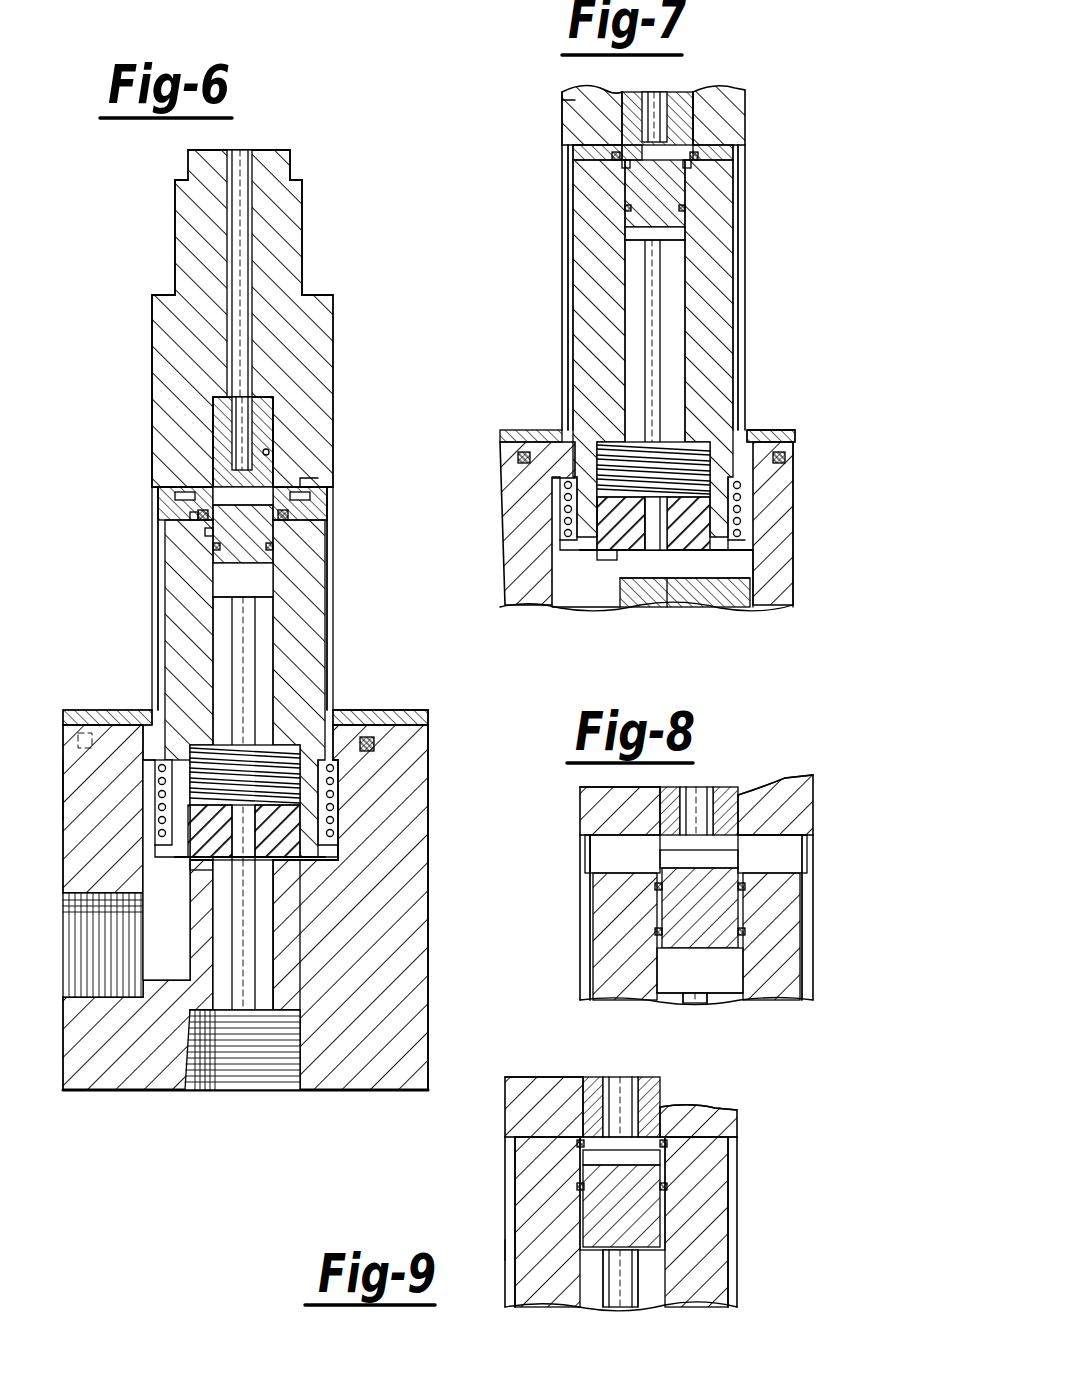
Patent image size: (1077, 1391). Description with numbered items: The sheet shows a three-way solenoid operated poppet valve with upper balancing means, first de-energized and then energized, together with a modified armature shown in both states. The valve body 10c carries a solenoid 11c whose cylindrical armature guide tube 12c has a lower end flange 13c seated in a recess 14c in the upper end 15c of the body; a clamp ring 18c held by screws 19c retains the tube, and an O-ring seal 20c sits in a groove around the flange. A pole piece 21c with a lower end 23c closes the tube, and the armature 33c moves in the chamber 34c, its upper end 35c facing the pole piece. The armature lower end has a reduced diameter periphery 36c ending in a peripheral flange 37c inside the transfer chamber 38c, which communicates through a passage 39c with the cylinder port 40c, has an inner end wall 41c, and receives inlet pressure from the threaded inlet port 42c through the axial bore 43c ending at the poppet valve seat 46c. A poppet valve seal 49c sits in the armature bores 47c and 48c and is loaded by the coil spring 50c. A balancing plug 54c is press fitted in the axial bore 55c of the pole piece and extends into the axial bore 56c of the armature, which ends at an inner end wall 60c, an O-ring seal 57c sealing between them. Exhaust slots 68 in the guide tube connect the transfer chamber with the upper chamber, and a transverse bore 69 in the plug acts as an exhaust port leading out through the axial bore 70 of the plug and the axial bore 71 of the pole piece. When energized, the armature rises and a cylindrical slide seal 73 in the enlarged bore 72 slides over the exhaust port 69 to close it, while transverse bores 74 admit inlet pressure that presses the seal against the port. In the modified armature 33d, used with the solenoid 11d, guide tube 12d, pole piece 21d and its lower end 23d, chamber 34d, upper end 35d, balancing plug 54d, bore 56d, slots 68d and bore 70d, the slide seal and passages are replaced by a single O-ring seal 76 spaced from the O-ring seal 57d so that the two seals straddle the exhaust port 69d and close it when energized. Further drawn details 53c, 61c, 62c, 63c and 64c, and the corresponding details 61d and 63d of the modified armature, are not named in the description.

In FIG. 6, the valve body 10c is at (432, 918).
In FIG. 7, the valve body 10c is at (503, 524).
In FIG. 6, the solenoid 11c is at (150, 316).
In FIG. 7, the solenoid 11c is at (560, 288).
In FIG. 8, the solenoid 11d is at (576, 910).
In FIG. 9, the solenoid 11d is at (503, 1302).
In FIG. 6, the solenoid armature guide tube 12c is at (165, 524).
In FIG. 8, the armature guide tube 12d is at (585, 878).
In FIG. 9, the armature guide tube 12d is at (508, 1250).
In FIG. 6, the lower end flange 13c is at (385, 765).
In FIG. 7, the lower end flange 13c is at (765, 472).
In FIG. 6, the recess 14c is at (100, 715).
In FIG. 7, the recess 14c is at (785, 440).
In FIG. 6, the upper end of valve body 15c is at (345, 730).
In FIG. 7, the upper end of valve body 15c is at (770, 440).
In FIG. 6, the clamp ring 18c is at (400, 715).
In FIG. 7, the clamp ring 18c is at (758, 430).
In FIG. 6, the screws 19c is at (80, 742).
In FIG. 6, the O-ring seal 20c is at (375, 748).
In FIG. 7, the O-ring seal 20c is at (780, 455).
In FIG. 6, the pole piece 21c is at (178, 235).
In FIG. 7, the pole piece 21c is at (735, 118).
In FIG. 8, the pole piece 21d is at (810, 805).
In FIG. 9, the pole piece 21d is at (505, 1105).
In FIG. 6, the lower end of pole piece 23c is at (195, 460).
In FIG. 7, the lower end of pole piece 23c is at (590, 145).
In FIG. 8, the lower end of pole piece 23d is at (805, 848).
In FIG. 9, the lower end of pole piece 23d is at (740, 1125).
In FIG. 6, the armature 33c is at (310, 640).
In FIG. 7, the armature 33c is at (580, 305).
In FIG. 8, the armature 33d is at (605, 980).
In FIG. 9, the armature 33d is at (540, 1290).
In FIG. 6, the chamber 34c is at (168, 490).
In FIG. 8, the chamber 34d is at (585, 848).
In FIG. 9, the chamber 34d is at (525, 1198).
In FIG. 6, the upper end of armature 35c is at (300, 495).
In FIG. 7, the upper end of armature 35c is at (700, 150).
In FIG. 8, the upper end of armature 35d is at (770, 855).
In FIG. 9, the upper end of armature 35d is at (710, 1140).
In FIG. 6, the reduced diameter periphery 36c is at (75, 790).
In FIG. 6, the peripheral flange 37c is at (325, 860).
In FIG. 7, the peripheral flange 37c is at (740, 550).
In FIG. 6, the transfer chamber 38c is at (335, 828).
In FIG. 7, the transfer chamber 38c is at (750, 560).
In FIG. 6, the passage 39c is at (182, 964).
In FIG. 7, the passage 39c is at (590, 600).
In FIG. 6, the cylinder port 40c is at (68, 893).
In FIG. 6, the inner end wall 41c is at (300, 870).
In FIG. 7, the inner end wall 41c is at (760, 590).
In FIG. 6, the inlet port 42c is at (195, 1060).
In FIG. 6, the axial bore 43c is at (265, 1000).
In FIG. 7, the axial bore 43c is at (680, 600).
In FIG. 6, the poppet valve seat 46c is at (244, 858).
In FIG. 7, the poppet valve seat 46c is at (667, 572).
In FIG. 6, the axial bore 47c is at (180, 891).
In FIG. 7, the axial bore 47c is at (605, 550).
In FIG. 6, the enlarged diameter bore 48c is at (273, 975).
In FIG. 7, the enlarged diameter bore 48c is at (600, 490).
In FIG. 6, the poppet valve seal 49c is at (172, 760).
In FIG. 7, the poppet valve seal 49c is at (575, 510).
In FIG. 6, the coil spring 50c is at (190, 760).
In FIG. 7, the coil spring 50c is at (600, 425).
In FIG. 6, the main spring 53c is at (330, 795).
In FIG. 7, the main spring 53c is at (735, 500).
In FIG. 6, the balancing plug 54c is at (265, 432).
In FIG. 7, the balancing plug 54c is at (675, 120).
In FIG. 8, the balancing plug 54d is at (730, 798).
In FIG. 9, the balancing plug 54d is at (595, 1095).
In FIG. 6, the axial bore 55c is at (270, 450).
In FIG. 6, the axial bore 56c is at (265, 575).
In FIG. 7, the axial bore 56c is at (680, 195).
In FIG. 8, the axial bore 56d is at (735, 965).
In FIG. 9, the axial bore 56d is at (660, 1225).
In FIG. 6, the O-ring seal 57c is at (272, 548).
In FIG. 7, the O-ring seal 57c is at (685, 208).
In FIG. 8, the O-ring seal 57d is at (745, 930).
In FIG. 9, the O-ring seal 57d is at (667, 1185).
In FIG. 6, the inner end wall 60c is at (208, 540).
In FIG. 7, the inner end wall 60c is at (625, 225).
In FIG. 6, the bore 61c is at (250, 662).
In FIG. 7, the bore 61c is at (660, 325).
In FIG. 8, the bore 61d is at (690, 1000).
In FIG. 9, the bore 61d is at (628, 1300).
In FIG. 6, the lower bore 62c is at (240, 862).
In FIG. 7, the lower bore 62c is at (670, 553).
In FIG. 6, the piston rod 63c is at (250, 590).
In FIG. 7, the piston rod 63c is at (660, 245).
In FIG. 8, the piston rod 63d is at (720, 992).
In FIG. 9, the piston rod 63d is at (640, 1262).
In FIG. 6, the counterbore 64c is at (213, 400).
In FIG. 6, the exhaust passages or slots 68 is at (158, 612).
In FIG. 7, the exhaust passages or slots 68 is at (740, 295).
In FIG. 8, the exhaust passages or slots 68d is at (588, 965).
In FIG. 9, the exhaust passages or slots 68d is at (515, 1223).
In FIG. 6, the exhaust port 69 is at (310, 480).
In FIG. 7, the exhaust port 69 is at (562, 100).
In FIG. 8, the exhaust port 69d is at (670, 855).
In FIG. 9, the exhaust port 69d is at (583, 1160).
In FIG. 6, the axial bore 70 is at (248, 392).
In FIG. 7, the axial bore 70 is at (648, 112).
In FIG. 8, the axial bore 70d is at (710, 795).
In FIG. 9, the axial bore 70d is at (622, 1090).
In FIG. 6, the axial bore 71 is at (243, 275).
In FIG. 6, the enlarged diameter bore 72 is at (200, 522).
In FIG. 7, the enlarged diameter bore 72 is at (622, 175).
In FIG. 6, the cylindrical slide seal 73 is at (205, 537).
In FIG. 7, the cylindrical slide seal 73 is at (690, 168).
In FIG. 6, the transverse bores 74 is at (195, 510).
In FIG. 7, the transverse bores 74 is at (698, 155).
In FIG. 8, the O-ring seal 76 is at (745, 888).
In FIG. 9, the O-ring seal 76 is at (667, 1148).